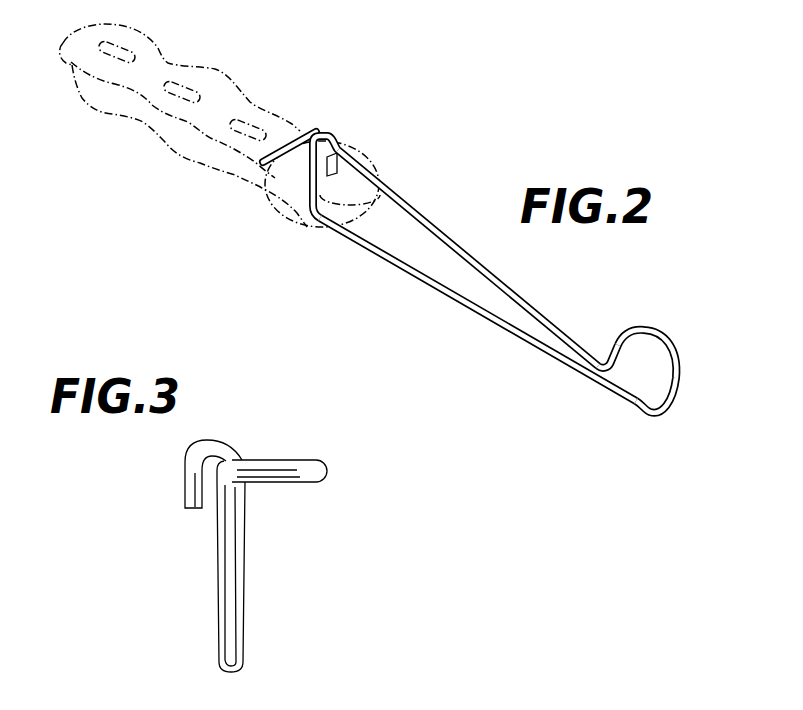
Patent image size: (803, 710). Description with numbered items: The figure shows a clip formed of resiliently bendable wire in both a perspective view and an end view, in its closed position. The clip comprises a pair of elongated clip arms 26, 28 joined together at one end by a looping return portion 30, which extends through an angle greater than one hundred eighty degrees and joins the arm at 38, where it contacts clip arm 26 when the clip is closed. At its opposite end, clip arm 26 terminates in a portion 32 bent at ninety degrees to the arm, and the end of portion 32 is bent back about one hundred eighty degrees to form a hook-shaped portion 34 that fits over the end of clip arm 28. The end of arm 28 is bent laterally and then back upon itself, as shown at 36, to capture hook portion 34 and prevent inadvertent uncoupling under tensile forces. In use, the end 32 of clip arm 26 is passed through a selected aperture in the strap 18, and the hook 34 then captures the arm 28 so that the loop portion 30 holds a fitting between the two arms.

In FIG. 2, the strap 18 is at (221, 74).
In FIG. 2, the clip arm 26 is at (444, 303).
In FIG. 3, the clip arm 26 is at (233, 676).
In FIG. 2, the clip arm 28 is at (497, 257).
In FIG. 3, the clip arm 28 is at (213, 462).
In FIG. 2, the looping return portion 30 is at (680, 410).
In FIG. 2, the bent end portion 32 is at (327, 132).
In FIG. 3, the bent end portion 32 is at (210, 437).
In FIG. 2, the hook-shaped portion 34 is at (341, 141).
In FIG. 3, the hook-shaped portion 34 is at (177, 495).
In FIG. 2, the bent-back end portion 36 is at (287, 168).
In FIG. 3, the bent-back end portion 36 is at (263, 458).
In FIG. 2, the arm-joining contact portion 38 is at (598, 358).